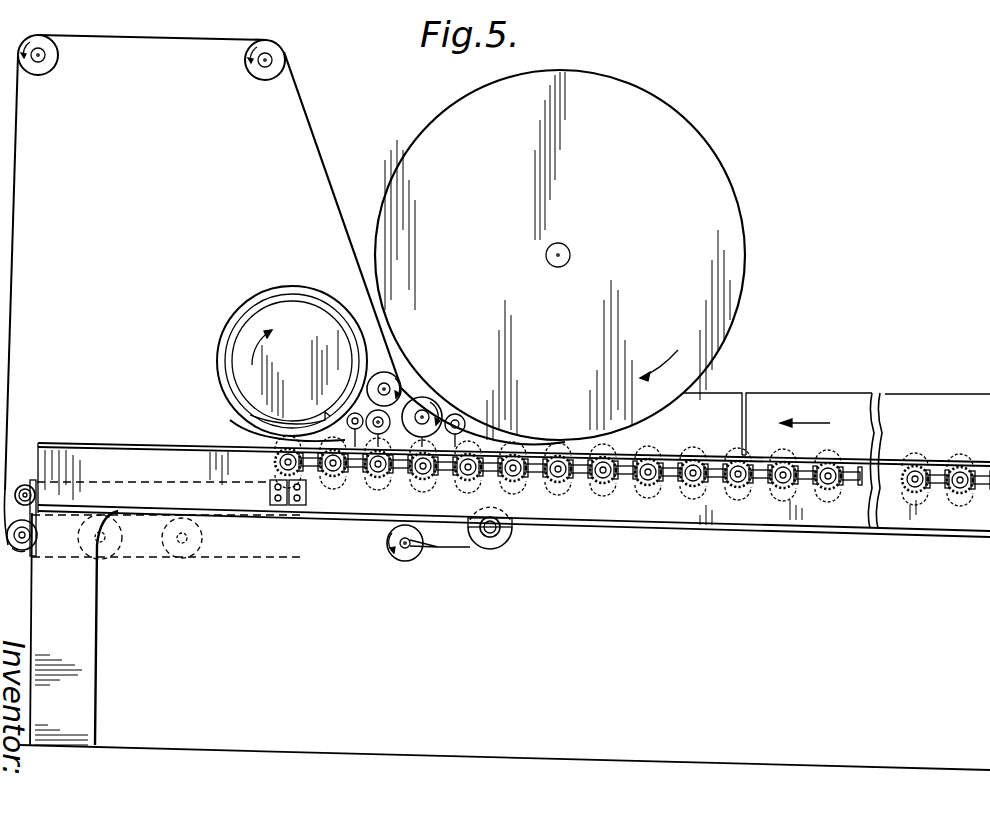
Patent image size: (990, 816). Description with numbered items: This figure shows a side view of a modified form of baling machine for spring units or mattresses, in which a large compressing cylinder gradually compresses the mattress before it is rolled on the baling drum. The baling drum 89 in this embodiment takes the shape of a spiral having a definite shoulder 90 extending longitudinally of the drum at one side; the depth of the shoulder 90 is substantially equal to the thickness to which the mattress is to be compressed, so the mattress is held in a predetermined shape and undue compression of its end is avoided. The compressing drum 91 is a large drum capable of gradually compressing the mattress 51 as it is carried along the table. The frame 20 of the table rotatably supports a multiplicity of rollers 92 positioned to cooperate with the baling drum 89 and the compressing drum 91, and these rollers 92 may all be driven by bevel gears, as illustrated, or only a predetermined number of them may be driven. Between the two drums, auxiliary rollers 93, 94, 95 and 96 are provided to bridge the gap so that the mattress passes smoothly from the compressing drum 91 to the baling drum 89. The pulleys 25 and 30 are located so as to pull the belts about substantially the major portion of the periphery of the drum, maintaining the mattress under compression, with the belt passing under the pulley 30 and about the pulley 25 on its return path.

The frame 20 is at (665, 508).
The pulley 25 is at (272, 483).
The pulley 30 is at (396, 378).
The mattress 51 is at (790, 400).
The baling drum 89 is at (262, 326).
The shoulder 90 is at (345, 422).
The compressing drum 91 is at (672, 147).
The rollers 92 is at (683, 452).
The auxiliary roller 93 is at (355, 473).
The auxiliary roller 94 is at (382, 473).
The auxiliary roller 95 is at (422, 473).
The auxiliary roller 96 is at (458, 473).